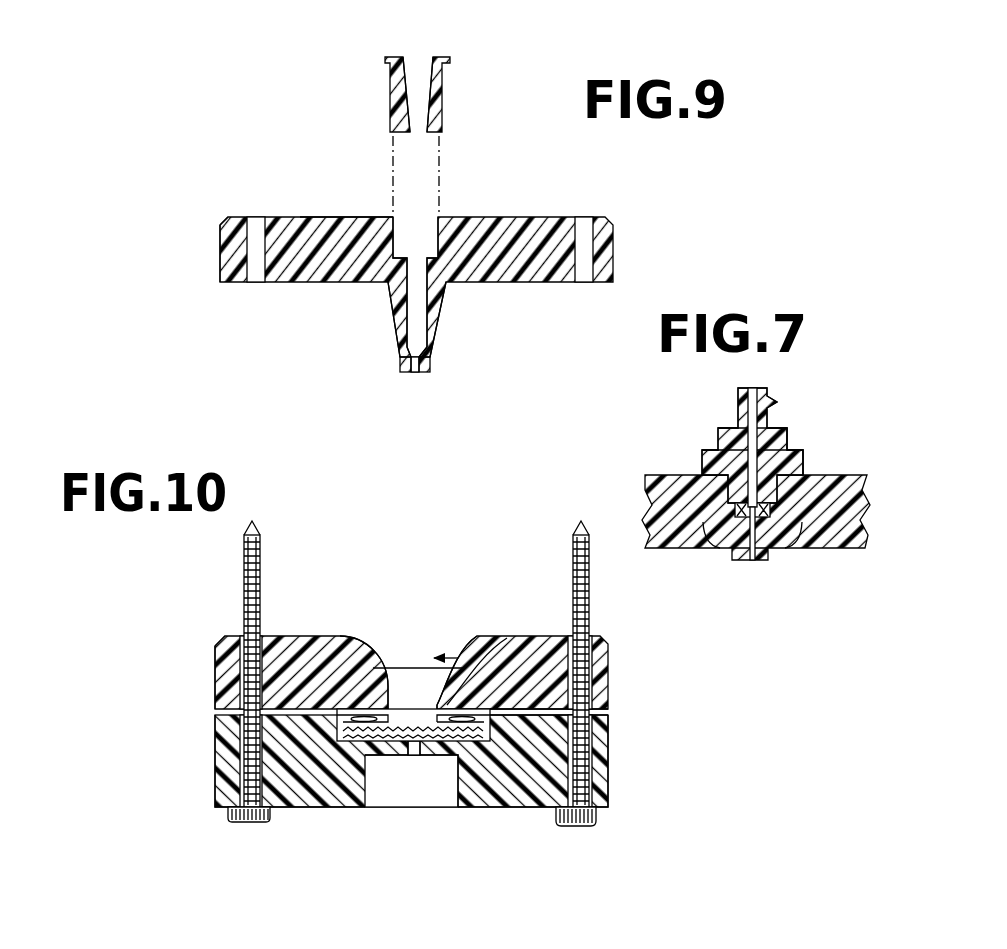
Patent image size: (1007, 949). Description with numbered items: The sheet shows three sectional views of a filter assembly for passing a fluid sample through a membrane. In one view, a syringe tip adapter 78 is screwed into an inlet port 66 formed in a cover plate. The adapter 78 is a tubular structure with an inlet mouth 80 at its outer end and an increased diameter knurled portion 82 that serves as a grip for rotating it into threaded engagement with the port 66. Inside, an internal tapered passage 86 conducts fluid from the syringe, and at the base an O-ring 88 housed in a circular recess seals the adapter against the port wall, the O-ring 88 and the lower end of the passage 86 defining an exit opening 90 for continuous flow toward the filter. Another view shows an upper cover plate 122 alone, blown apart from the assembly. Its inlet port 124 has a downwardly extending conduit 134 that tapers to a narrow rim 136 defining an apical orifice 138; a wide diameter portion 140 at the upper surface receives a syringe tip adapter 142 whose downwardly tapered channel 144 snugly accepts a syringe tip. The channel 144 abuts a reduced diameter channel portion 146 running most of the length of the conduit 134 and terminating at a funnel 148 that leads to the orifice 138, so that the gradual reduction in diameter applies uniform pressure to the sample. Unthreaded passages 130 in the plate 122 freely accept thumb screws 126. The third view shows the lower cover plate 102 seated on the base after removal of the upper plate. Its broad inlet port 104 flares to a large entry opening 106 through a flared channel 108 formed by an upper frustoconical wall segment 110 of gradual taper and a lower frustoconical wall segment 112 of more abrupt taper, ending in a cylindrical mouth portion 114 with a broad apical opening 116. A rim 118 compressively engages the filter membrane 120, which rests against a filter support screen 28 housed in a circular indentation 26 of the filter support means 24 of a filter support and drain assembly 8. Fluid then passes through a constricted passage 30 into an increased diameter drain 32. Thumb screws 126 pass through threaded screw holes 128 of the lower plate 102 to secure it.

In FIG. 10, the filter support and drain assembly 8 is at (336, 808).
In FIG. 10, the filter support means 24 is at (305, 808).
In FIG. 10, the circular indentation 26 is at (393, 742).
In FIG. 10, the filter support screen 28 is at (497, 808).
In FIG. 10, the constricted passage 30 is at (409, 752).
In FIG. 10, the increased diameter drain 32 is at (427, 790).
In FIG. 7, the inlet port 66 is at (713, 547).
In FIG. 7, the syringe tip adapter 78 is at (716, 427).
In FIG. 7, the inlet mouth 80 is at (757, 390).
In FIG. 7, the knurled portion 82 is at (804, 470).
In FIG. 7, the internal tapered passage 86 is at (760, 455).
In FIG. 7, the O-ring 88 is at (787, 548).
In FIG. 7, the exit opening 90 is at (752, 561).
In FIG. 10, the lower cover plate 102 is at (211, 655).
In FIG. 10, the broad inlet port 104 is at (473, 630).
In FIG. 10, the entry opening 106 is at (373, 655).
In FIG. 10, the flared channel 108 is at (491, 638).
In FIG. 10, the upper frustoconical wall segment 110 is at (375, 635).
In FIG. 10, the lower frustoconical wall segment 112 is at (420, 685).
In FIG. 10, the cylindrical mouth portion 114 is at (452, 806).
In FIG. 10, the broad apical opening 116 is at (402, 720).
In FIG. 10, the rim 118 is at (448, 692).
In FIG. 10, the filter membrane 120 is at (540, 736).
In FIG. 9, the upper cover plate 122 is at (217, 250).
In FIG. 9, the inlet port 124 is at (441, 215).
In FIG. 10, the thumb screw 126 is at (236, 823).
In FIG. 10, the threaded screw hole 128 is at (243, 655).
In FIG. 9, the unthreaded passage 130 is at (256, 260).
In FIG. 9, the downwardly extending conduit 134 is at (444, 318).
In FIG. 9, the rim 136 is at (429, 372).
In FIG. 9, the apical orifice 138 is at (413, 372).
In FIG. 9, the wide diameter portion 140 is at (402, 258).
In FIG. 9, the syringe tip adapter 142 is at (448, 57).
In FIG. 9, the downwardly tapered channel 144 is at (415, 75).
In FIG. 9, the reduced diameter channel portion 146 is at (347, 219).
In FIG. 9, the funnel 148 is at (401, 351).